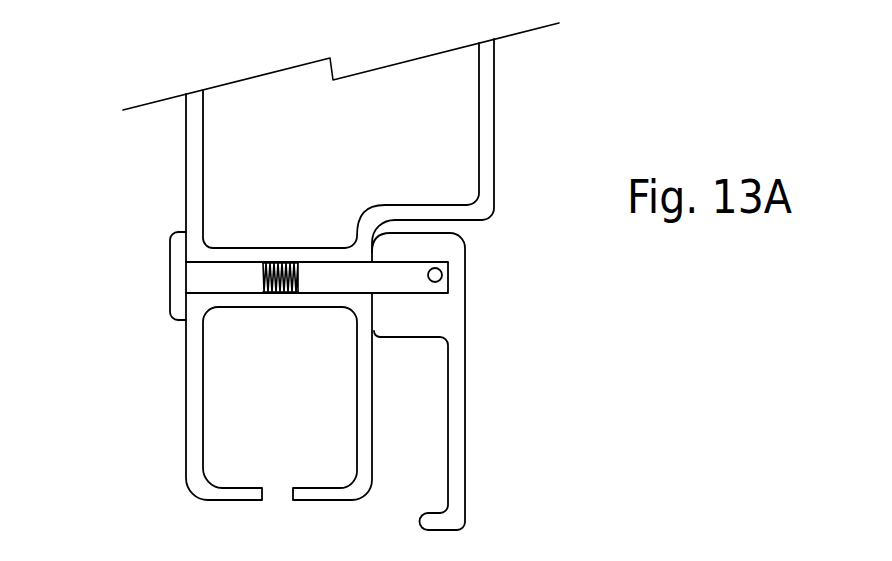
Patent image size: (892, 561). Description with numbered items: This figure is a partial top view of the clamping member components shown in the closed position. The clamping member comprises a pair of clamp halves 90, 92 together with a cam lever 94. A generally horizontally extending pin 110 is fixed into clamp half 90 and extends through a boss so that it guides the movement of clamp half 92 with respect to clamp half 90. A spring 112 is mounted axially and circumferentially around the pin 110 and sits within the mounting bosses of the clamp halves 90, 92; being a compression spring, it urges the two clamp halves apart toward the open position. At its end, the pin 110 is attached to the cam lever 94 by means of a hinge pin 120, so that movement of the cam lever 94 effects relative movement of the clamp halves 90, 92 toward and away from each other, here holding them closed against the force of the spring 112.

The clamp half 90 is at (186, 425).
The clamp half 92 is at (497, 90).
The cam lever 94 is at (465, 417).
The pin 110 is at (170, 275).
The spring 112 is at (278, 307).
The hinge pin 120 is at (443, 273).